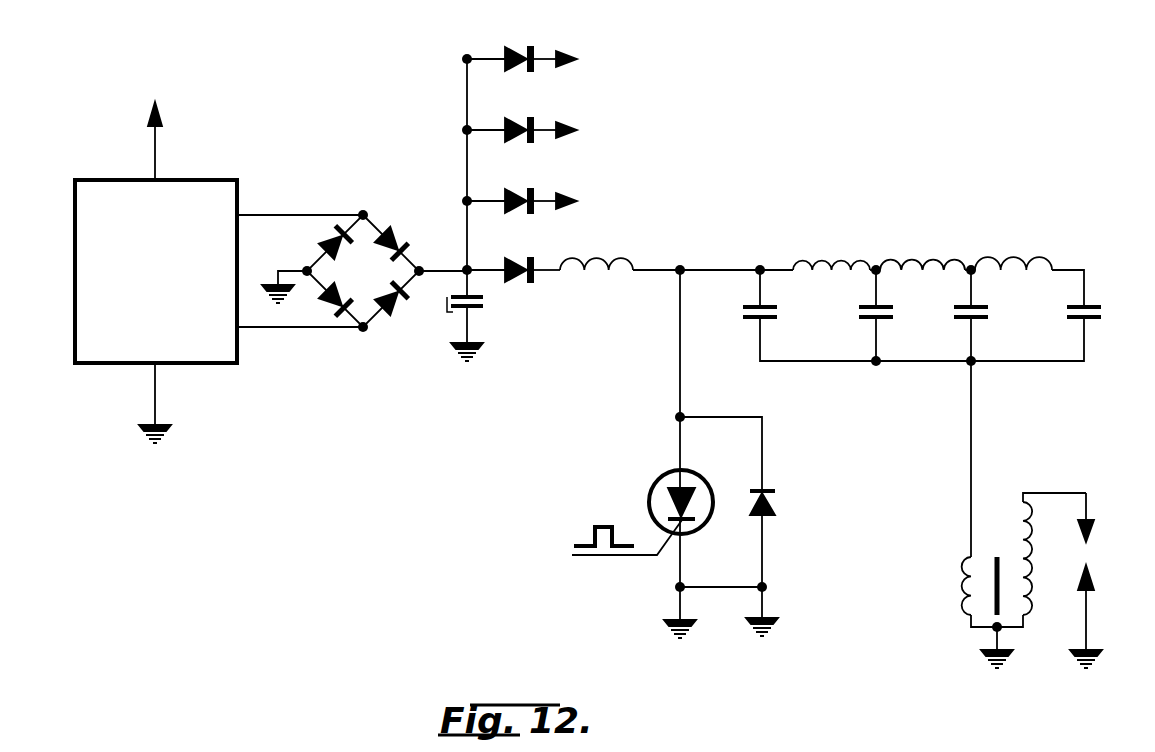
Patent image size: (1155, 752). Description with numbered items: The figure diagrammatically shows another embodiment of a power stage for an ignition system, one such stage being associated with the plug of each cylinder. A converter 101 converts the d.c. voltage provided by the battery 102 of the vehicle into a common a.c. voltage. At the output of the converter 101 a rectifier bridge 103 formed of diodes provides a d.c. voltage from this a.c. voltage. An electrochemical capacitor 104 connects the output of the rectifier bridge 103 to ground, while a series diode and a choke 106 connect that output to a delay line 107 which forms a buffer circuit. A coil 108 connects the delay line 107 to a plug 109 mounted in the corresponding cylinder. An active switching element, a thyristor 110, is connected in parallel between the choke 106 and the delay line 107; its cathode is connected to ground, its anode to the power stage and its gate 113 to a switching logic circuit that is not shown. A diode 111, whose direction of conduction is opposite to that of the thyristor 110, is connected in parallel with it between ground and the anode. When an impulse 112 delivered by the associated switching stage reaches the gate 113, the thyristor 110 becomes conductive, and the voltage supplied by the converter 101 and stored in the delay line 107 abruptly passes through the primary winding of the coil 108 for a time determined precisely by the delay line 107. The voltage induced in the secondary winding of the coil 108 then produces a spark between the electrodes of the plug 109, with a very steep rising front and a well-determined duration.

The converter 101 is at (156, 271).
The battery 102 is at (144, 130).
The rectifier bridge 103 is at (364, 262).
The electrochemical capacitor 104 is at (448, 308).
The choke 106 is at (591, 260).
The delay line 107 is at (922, 291).
The coil 108 is at (993, 514).
The plug 109 is at (1107, 580).
The thyristor 110 is at (697, 500).
The diode 111 is at (772, 503).
The impulse 112 is at (588, 540).
The gate 113 is at (660, 548).